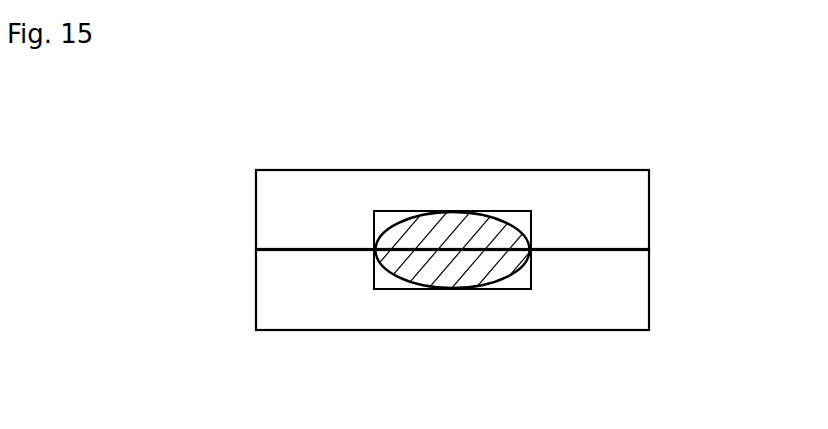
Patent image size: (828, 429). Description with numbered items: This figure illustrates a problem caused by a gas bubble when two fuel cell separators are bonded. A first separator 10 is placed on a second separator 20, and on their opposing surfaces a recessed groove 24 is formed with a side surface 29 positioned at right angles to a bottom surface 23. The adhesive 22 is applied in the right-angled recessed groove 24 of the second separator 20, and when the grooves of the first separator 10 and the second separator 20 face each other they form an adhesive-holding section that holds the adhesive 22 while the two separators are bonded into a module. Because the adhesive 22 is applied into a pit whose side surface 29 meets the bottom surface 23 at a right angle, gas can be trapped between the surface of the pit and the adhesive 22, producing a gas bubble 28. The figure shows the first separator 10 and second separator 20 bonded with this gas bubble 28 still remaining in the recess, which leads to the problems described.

The first separator 10 is at (612, 210).
The second separator 20 is at (635, 315).
The adhesive 22 is at (468, 235).
The bottom surface 23 is at (440, 292).
The recessed groove 24 is at (385, 215).
The gas bubble 28 is at (520, 288).
The side surface 29 is at (532, 265).